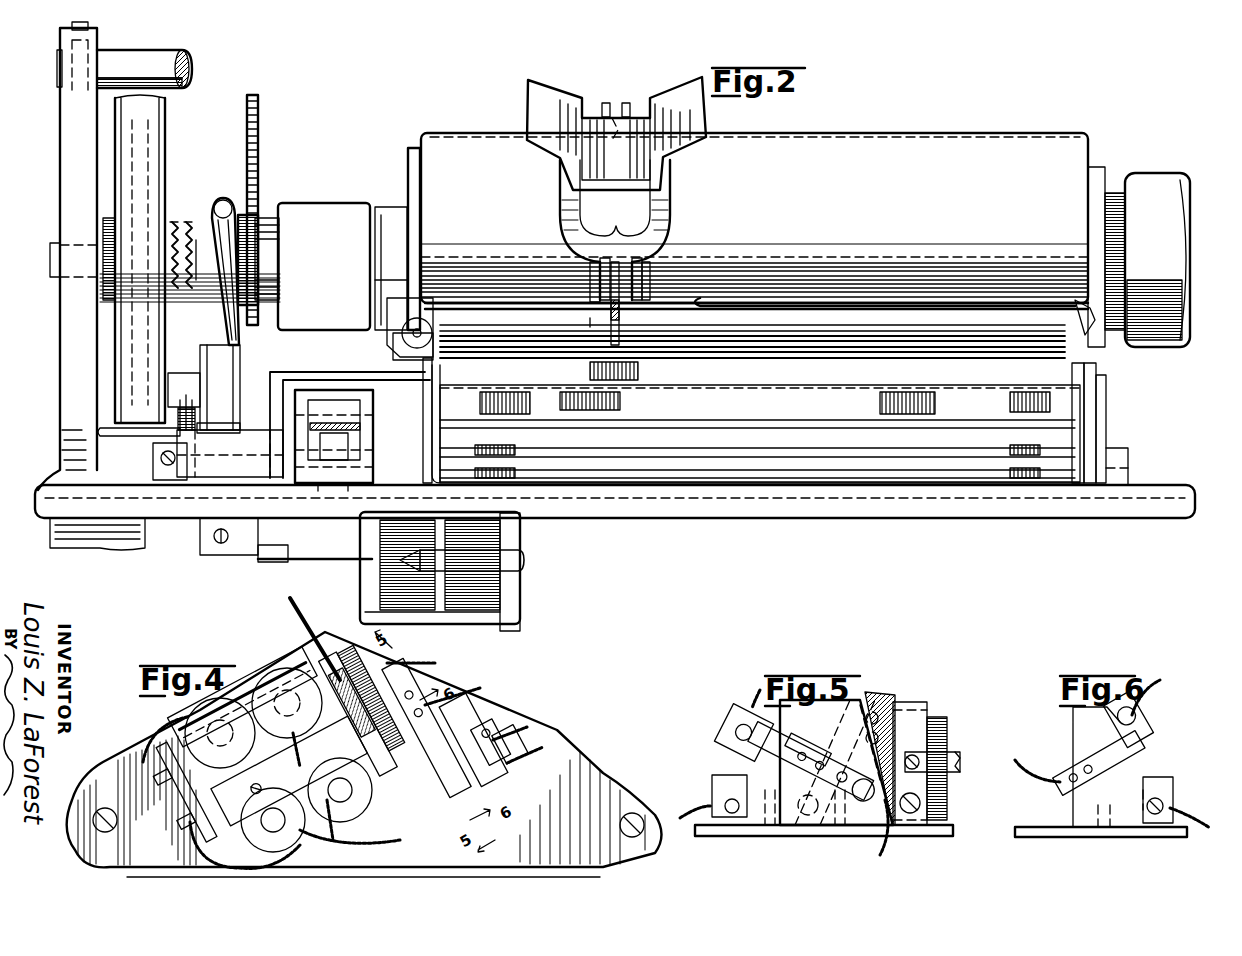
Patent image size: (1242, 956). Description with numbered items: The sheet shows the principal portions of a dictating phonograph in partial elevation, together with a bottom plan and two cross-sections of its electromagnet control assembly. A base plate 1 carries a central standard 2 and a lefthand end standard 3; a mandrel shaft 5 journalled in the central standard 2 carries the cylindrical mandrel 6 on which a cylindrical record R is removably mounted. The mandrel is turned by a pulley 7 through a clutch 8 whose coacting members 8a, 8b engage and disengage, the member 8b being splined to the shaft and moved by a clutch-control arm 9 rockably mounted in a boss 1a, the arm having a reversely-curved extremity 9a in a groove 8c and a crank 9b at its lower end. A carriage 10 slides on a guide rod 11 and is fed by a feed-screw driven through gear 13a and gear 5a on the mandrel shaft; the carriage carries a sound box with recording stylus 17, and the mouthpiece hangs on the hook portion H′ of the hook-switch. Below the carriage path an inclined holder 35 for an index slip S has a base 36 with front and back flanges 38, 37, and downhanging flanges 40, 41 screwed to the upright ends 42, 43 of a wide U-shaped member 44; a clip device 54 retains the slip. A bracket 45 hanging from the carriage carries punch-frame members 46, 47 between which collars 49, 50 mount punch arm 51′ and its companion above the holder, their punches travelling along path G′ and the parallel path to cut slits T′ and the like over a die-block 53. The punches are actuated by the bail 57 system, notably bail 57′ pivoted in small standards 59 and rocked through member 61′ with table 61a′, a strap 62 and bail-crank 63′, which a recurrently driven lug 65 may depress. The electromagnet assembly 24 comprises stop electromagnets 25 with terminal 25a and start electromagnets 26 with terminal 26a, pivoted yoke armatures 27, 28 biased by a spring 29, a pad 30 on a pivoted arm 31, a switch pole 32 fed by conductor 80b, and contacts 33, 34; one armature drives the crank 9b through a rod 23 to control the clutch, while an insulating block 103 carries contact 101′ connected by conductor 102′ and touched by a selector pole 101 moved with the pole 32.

In FIG. 2, the base plate 1 is at (42, 492).
In FIG. 2, the boss 1a is at (220, 387).
In FIG. 2, the central standard 2 is at (330, 210).
In FIG. 2, the lefthand end standard 3 is at (60, 434).
In FIG. 2, the mandrel shaft 5 is at (378, 210).
In FIG. 2, the gear 5a is at (258, 254).
In FIG. 2, the cylindrical mandrel 6 is at (412, 148).
In FIG. 2, the pulley 7 is at (165, 112).
In FIG. 2, the clutch 8 is at (182, 222).
In FIG. 2, the clutch member 8a is at (172, 220).
In FIG. 2, the clutch member 8b is at (198, 220).
In FIG. 2, the groove 8c is at (208, 240).
In FIG. 2, the clutch-control arm 9 is at (222, 324).
In FIG. 2, the reversely-curved extremity 9a is at (224, 200).
In FIG. 2, the crank 9b is at (262, 550).
In FIG. 2, the carriage 10 is at (548, 92).
In FIG. 2, the guide rod 11 is at (155, 58).
In FIG. 2, the gear 13a is at (258, 145).
In FIG. 2, the recording stylus 17 is at (616, 141).
In FIG. 2, the rod 23 is at (327, 562).
In FIG. 4, the rod 23 is at (288, 600).
In FIG. 5, the rod 23 is at (960, 762).
In FIG. 2, the electromagnet assembly 24 is at (545, 564).
In FIG. 4, the electromagnet assembly 24 is at (232, 677).
In FIG. 2, the stop electromagnets 25 is at (430, 605).
In FIG. 4, the stop electromagnets 25 is at (280, 725).
In FIG. 5, the stop electromagnets 25 is at (940, 736).
In FIG. 4, the first terminal 25a is at (155, 748).
In FIG. 4, the start electromagnets 26 is at (330, 812).
In FIG. 4, the first terminal 26a is at (235, 858).
In FIG. 2, the yoke armature 27 is at (520, 610).
In FIG. 4, the yoke armature 27 is at (283, 725).
In FIG. 5, the yoke armature 27 is at (910, 703).
In FIG. 4, the yoke armature 28 is at (289, 771).
In FIG. 5, the yoke armature 28 is at (868, 695).
In FIG. 4, the spring 29 is at (170, 800).
In FIG. 4, the pad 30 is at (341, 682).
In FIG. 5, the pad 30 is at (890, 693).
In FIG. 4, the pivoted arm 31 is at (245, 701).
In FIG. 5, the pivoted arm 31 is at (947, 800).
In FIG. 4, the switch pole 32 is at (430, 734).
In FIG. 5, the switch pole 32 is at (814, 761).
In FIG. 5, the switch contact 33 is at (716, 775).
In FIG. 5, the switch contact 34 is at (725, 720).
In FIG. 2, the holder 35 is at (1095, 362).
In FIG. 2, the base 36 is at (393, 340).
In FIG. 2, the flange 37 is at (805, 298).
In FIG. 2, the flange 38 is at (935, 352).
In FIG. 2, the flange 40 is at (432, 395).
In FIG. 2, the flange 41 is at (1084, 396).
In FIG. 2, the upright end 42 is at (441, 440).
In FIG. 2, the upright end 43 is at (1096, 414).
In FIG. 2, the U-shaped member 44 is at (828, 492).
In FIG. 2, the bracket 45 is at (665, 205).
In FIG. 2, the punch-frame member 46 is at (602, 262).
In FIG. 2, the punch-frame member 47 is at (642, 270).
In FIG. 2, the C-shaped collar 49 is at (592, 282).
In FIG. 2, the C-shaped collar 50 is at (650, 290).
In FIG. 2, the punch arm 51′ is at (604, 262).
In FIG. 2, the die-block 53 is at (615, 382).
In FIG. 2, the clip device 54 is at (390, 315).
In FIG. 2, the foot 57 is at (1128, 476).
In FIG. 2, the bail 57′ is at (302, 372).
In FIG. 2, the small standard 59 is at (153, 466).
In FIG. 2, the member 61′ is at (140, 436).
In FIG. 2, the table 61a′ is at (180, 410).
In FIG. 2, the U-shaped strap 62 is at (230, 453).
In FIG. 2, the bail-crank 63′ is at (180, 412).
In FIG. 2, the lug 65 is at (189, 373).
In FIG. 4, the conductor 80b is at (437, 663).
In FIG. 4, the switch pole 101 is at (497, 738).
In FIG. 6, the switch pole 101 is at (1110, 757).
In FIG. 4, the contact 101′ is at (513, 742).
In FIG. 6, the contact 101′ is at (1158, 728).
In FIG. 4, the conductor 102′ is at (527, 727).
In FIG. 6, the conductor 102′ is at (1160, 682).
In FIG. 4, the insulating block 103 is at (482, 730).
In FIG. 6, the insulating block 103 is at (1080, 722).
In FIG. 2, the record R is at (895, 145).
In FIG. 2, the index slip S is at (1105, 335).
In FIG. 2, the slit T′ is at (548, 332).
In FIG. 2, the path G′ is at (710, 332).
In FIG. 2, the hook portion H′ is at (345, 425).